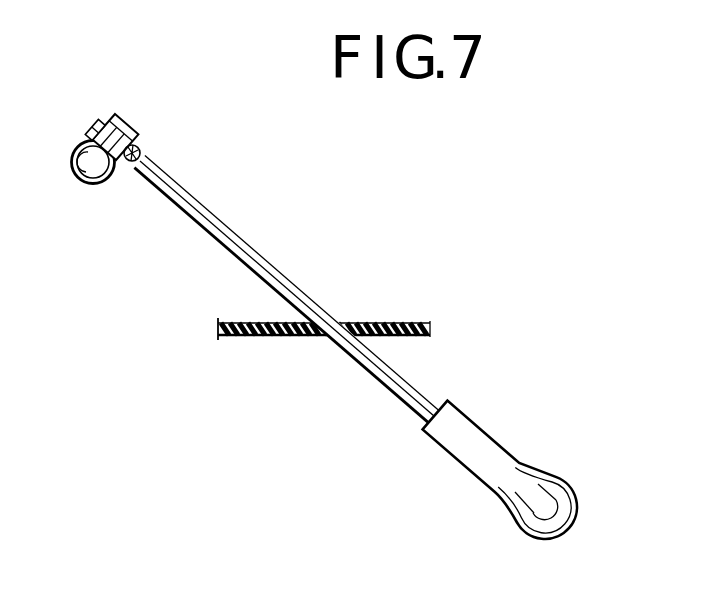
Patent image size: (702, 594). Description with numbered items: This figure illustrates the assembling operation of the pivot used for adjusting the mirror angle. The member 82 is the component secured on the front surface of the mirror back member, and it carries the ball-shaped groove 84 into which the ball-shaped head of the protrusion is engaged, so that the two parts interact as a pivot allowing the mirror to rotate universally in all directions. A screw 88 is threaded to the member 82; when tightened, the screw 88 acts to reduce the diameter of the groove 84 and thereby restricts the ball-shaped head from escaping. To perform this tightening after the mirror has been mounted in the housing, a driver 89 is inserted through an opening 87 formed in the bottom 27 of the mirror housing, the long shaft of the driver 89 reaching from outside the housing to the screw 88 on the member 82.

The bottom 27 is at (393, 322).
The member 82 is at (117, 176).
The ball-shaped groove 84 is at (96, 170).
The opening 87 is at (318, 337).
The screw 88 is at (139, 149).
The driver 89 is at (424, 398).